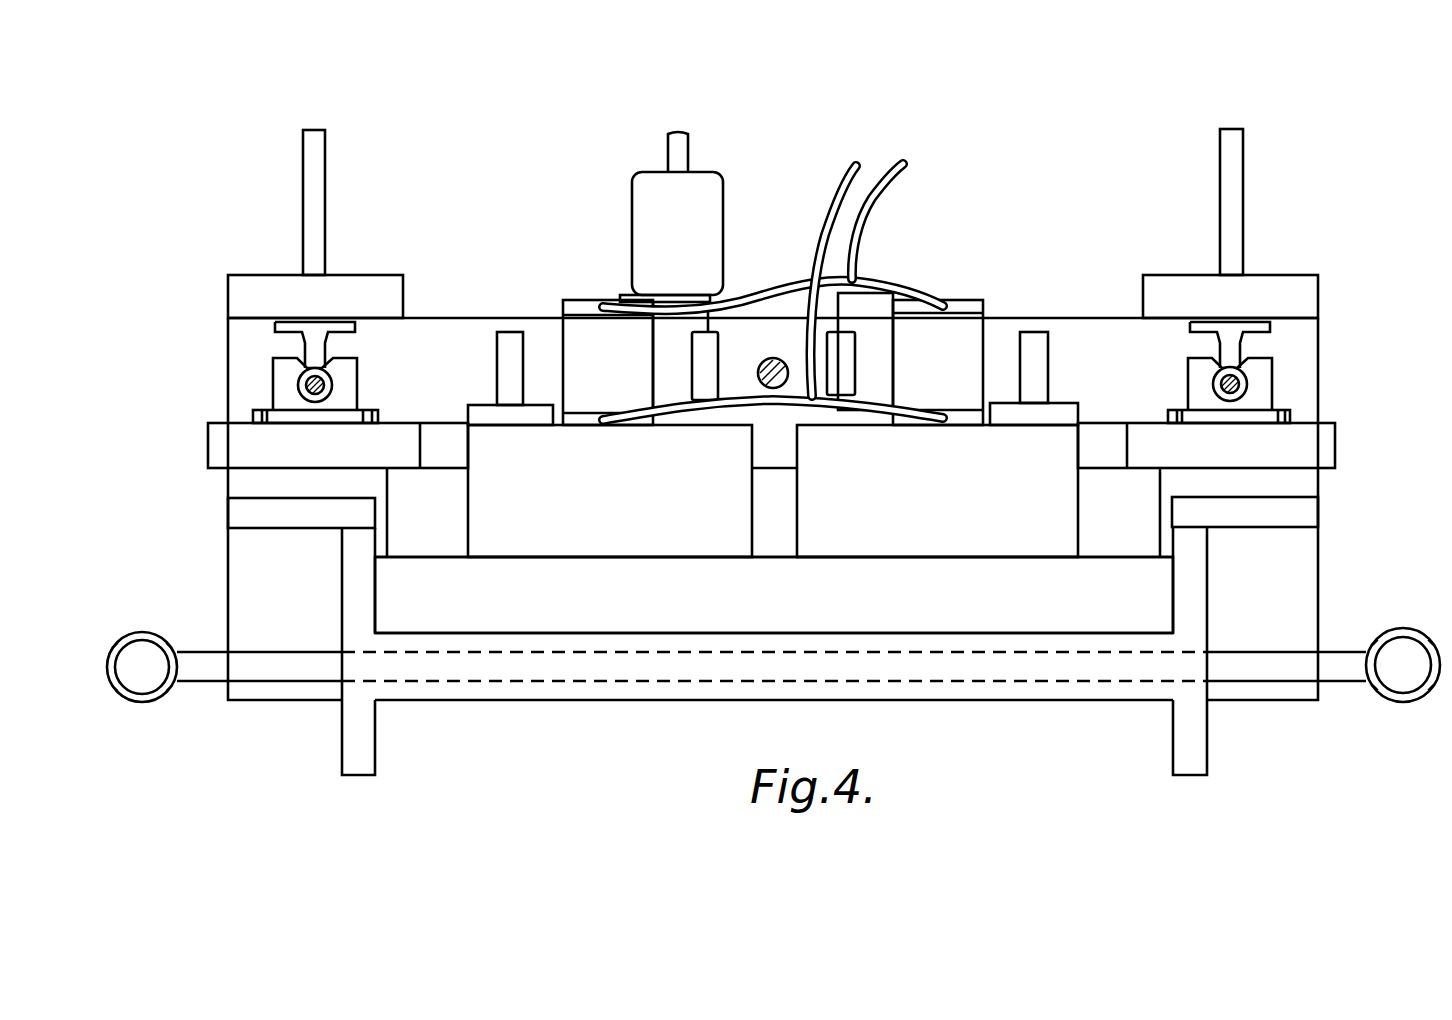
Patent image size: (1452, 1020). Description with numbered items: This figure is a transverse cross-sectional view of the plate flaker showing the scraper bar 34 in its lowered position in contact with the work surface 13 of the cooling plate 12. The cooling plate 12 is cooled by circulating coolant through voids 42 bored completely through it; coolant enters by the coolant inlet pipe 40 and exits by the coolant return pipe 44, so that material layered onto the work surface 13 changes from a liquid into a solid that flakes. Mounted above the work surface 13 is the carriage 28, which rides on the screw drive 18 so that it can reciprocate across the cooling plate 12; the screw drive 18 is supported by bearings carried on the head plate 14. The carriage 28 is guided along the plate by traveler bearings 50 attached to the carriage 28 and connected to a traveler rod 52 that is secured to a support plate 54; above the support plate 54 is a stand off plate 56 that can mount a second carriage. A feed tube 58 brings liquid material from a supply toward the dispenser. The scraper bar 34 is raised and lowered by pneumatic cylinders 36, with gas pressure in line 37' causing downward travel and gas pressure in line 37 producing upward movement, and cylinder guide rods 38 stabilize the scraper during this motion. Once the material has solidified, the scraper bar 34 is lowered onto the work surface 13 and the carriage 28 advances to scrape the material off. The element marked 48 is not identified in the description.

The cooling plate 12 is at (597, 700).
The work surface 13 is at (505, 637).
The head plate 14 is at (1301, 352).
The screw drive 18 is at (765, 358).
The carriage 28 is at (232, 447).
The scraper bar 34 is at (972, 612).
The pneumatic cylinder 36 is at (576, 336).
The line 37 is at (773, 283).
The line 37' is at (918, 205).
The cylinder guide rod 38 is at (514, 350).
The coolant inlet pipe 40 is at (1418, 704).
The voids 42 is at (790, 679).
The coolant return pipe 44 is at (138, 701).
The clamp block 48 is at (237, 512).
The traveler bearing 50 is at (1258, 413).
The traveler rod 52 is at (1249, 386).
The support plate 54 is at (284, 294).
The stand off plate 56 is at (312, 158).
The feed tube 58 is at (672, 162).